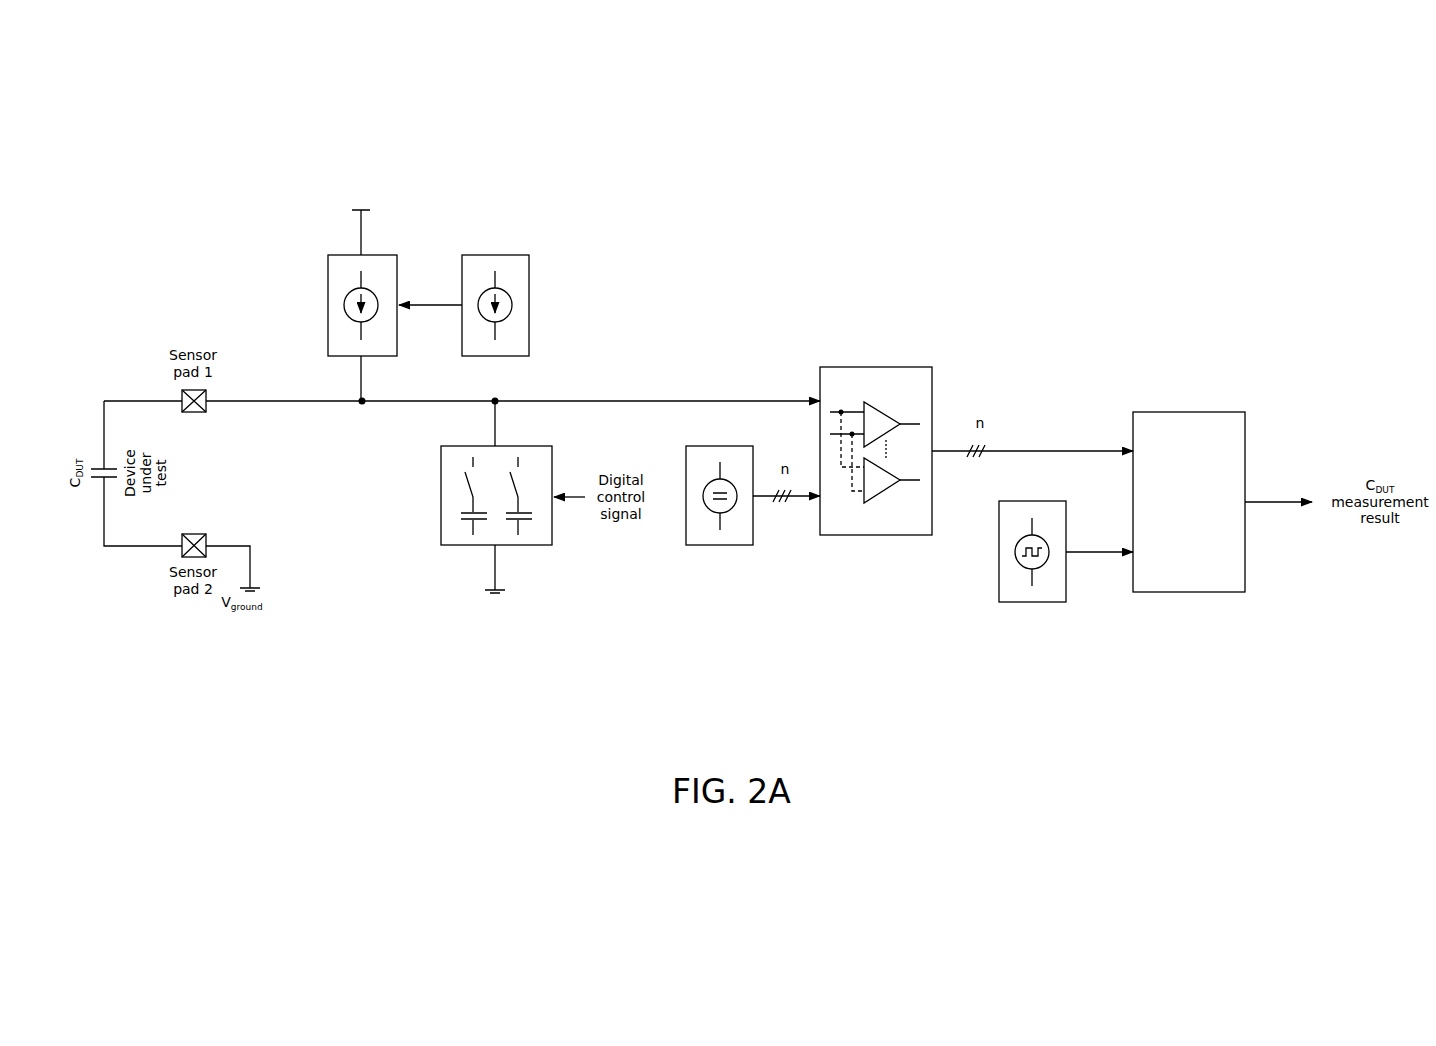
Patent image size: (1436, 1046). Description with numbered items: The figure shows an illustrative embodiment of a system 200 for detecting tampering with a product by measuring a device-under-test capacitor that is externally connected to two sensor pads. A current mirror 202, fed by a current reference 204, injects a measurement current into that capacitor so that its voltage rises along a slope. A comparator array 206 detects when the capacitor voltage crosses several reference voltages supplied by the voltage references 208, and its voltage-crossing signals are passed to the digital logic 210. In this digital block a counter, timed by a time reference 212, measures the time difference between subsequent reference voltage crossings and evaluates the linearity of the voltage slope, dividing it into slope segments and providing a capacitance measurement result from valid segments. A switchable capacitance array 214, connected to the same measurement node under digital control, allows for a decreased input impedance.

The system 200 is at (1066, 191).
The current mirror 202 is at (348, 257).
The current reference 204 is at (506, 257).
The comparator array 206 is at (868, 532).
The voltage references 208 is at (731, 450).
The digital logic 210 is at (1209, 413).
The time reference 212 is at (1045, 500).
The switchable capacitance array 214 is at (512, 547).